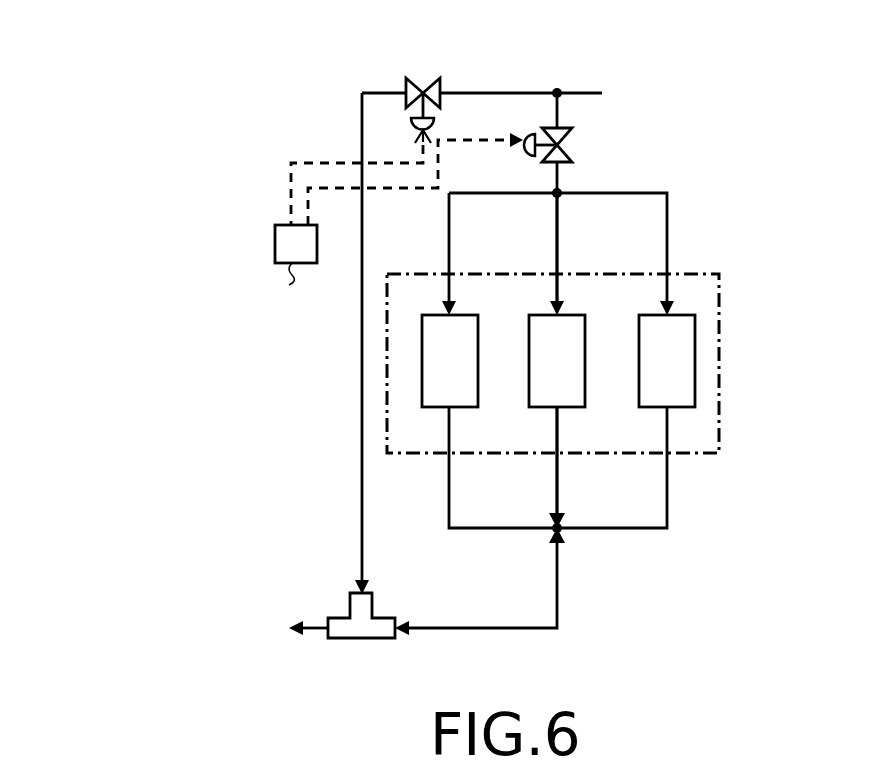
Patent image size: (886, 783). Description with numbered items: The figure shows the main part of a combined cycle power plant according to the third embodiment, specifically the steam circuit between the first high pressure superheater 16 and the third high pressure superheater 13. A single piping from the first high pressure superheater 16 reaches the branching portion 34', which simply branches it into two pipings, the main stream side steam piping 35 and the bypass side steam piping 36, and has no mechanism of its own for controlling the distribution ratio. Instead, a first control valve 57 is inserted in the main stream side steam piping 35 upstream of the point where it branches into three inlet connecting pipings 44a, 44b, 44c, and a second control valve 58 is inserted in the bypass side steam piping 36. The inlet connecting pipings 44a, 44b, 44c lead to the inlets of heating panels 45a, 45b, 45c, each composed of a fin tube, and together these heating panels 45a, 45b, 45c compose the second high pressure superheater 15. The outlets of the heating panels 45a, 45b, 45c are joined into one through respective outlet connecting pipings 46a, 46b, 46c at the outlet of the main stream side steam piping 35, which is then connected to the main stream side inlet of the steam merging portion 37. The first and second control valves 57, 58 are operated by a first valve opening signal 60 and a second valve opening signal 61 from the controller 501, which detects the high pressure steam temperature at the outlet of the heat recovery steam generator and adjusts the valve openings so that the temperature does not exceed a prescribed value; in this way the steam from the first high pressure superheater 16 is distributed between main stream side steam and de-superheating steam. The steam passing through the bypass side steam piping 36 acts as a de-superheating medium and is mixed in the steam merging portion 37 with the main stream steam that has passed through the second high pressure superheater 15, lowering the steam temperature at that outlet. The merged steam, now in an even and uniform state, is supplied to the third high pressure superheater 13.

The branching portion 34' is at (482, 74).
The second control valve 58 is at (424, 79).
The bypass side steam piping 36 is at (361, 406).
The first control valve 57 is at (574, 140).
The main stream side steam piping 35 is at (558, 170).
The inlet connecting piping 44a is at (450, 243).
The inlet connecting piping 44b is at (559, 243).
The inlet connecting piping 44c is at (668, 243).
The second high pressure superheater 15 is at (720, 340).
The heating panel 45a is at (450, 361).
The heating panel 45b is at (557, 361).
The heating panel 45c is at (667, 361).
The outlet connecting piping 46a is at (450, 492).
The outlet connecting piping 46b is at (559, 492).
The outlet connecting piping 46c is at (668, 492).
The steam merging portion 37 is at (386, 617).
The controller 501 is at (275, 245).
The second valve opening signal 61 is at (301, 158).
The first valve opening signal 60 is at (403, 190).
The first high pressure superheater 16 is at (721, 67).
The third high pressure superheater 13 is at (137, 598).